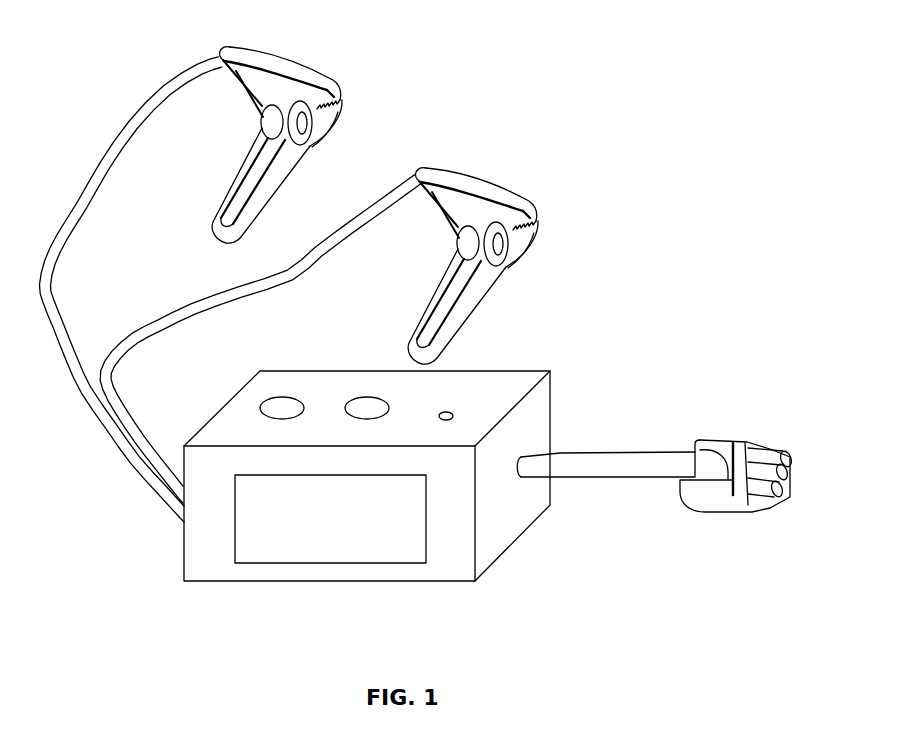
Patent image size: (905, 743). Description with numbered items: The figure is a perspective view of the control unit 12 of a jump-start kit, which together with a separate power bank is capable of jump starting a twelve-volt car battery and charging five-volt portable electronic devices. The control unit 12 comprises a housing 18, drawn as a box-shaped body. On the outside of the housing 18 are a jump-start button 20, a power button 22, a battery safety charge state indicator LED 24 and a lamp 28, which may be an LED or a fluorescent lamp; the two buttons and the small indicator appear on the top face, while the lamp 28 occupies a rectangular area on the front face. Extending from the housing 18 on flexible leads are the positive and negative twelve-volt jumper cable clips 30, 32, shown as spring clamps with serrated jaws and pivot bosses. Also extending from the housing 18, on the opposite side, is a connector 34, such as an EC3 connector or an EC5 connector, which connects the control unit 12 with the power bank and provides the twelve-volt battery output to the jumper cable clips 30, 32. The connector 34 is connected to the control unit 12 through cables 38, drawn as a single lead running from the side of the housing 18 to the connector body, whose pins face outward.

The control unit 12 is at (375, 476).
The housing 18 is at (497, 533).
The jump-start button 20 is at (283, 405).
The power button 22 is at (368, 405).
The battery safety charge state indicator LED 24 is at (452, 410).
The lamp 28 is at (423, 569).
The positive 12 V jumper cable clip 30 is at (330, 77).
The negative 12 V jumper cable clip 32 is at (527, 194).
The connector 34 is at (757, 518).
The cables 38 is at (615, 481).